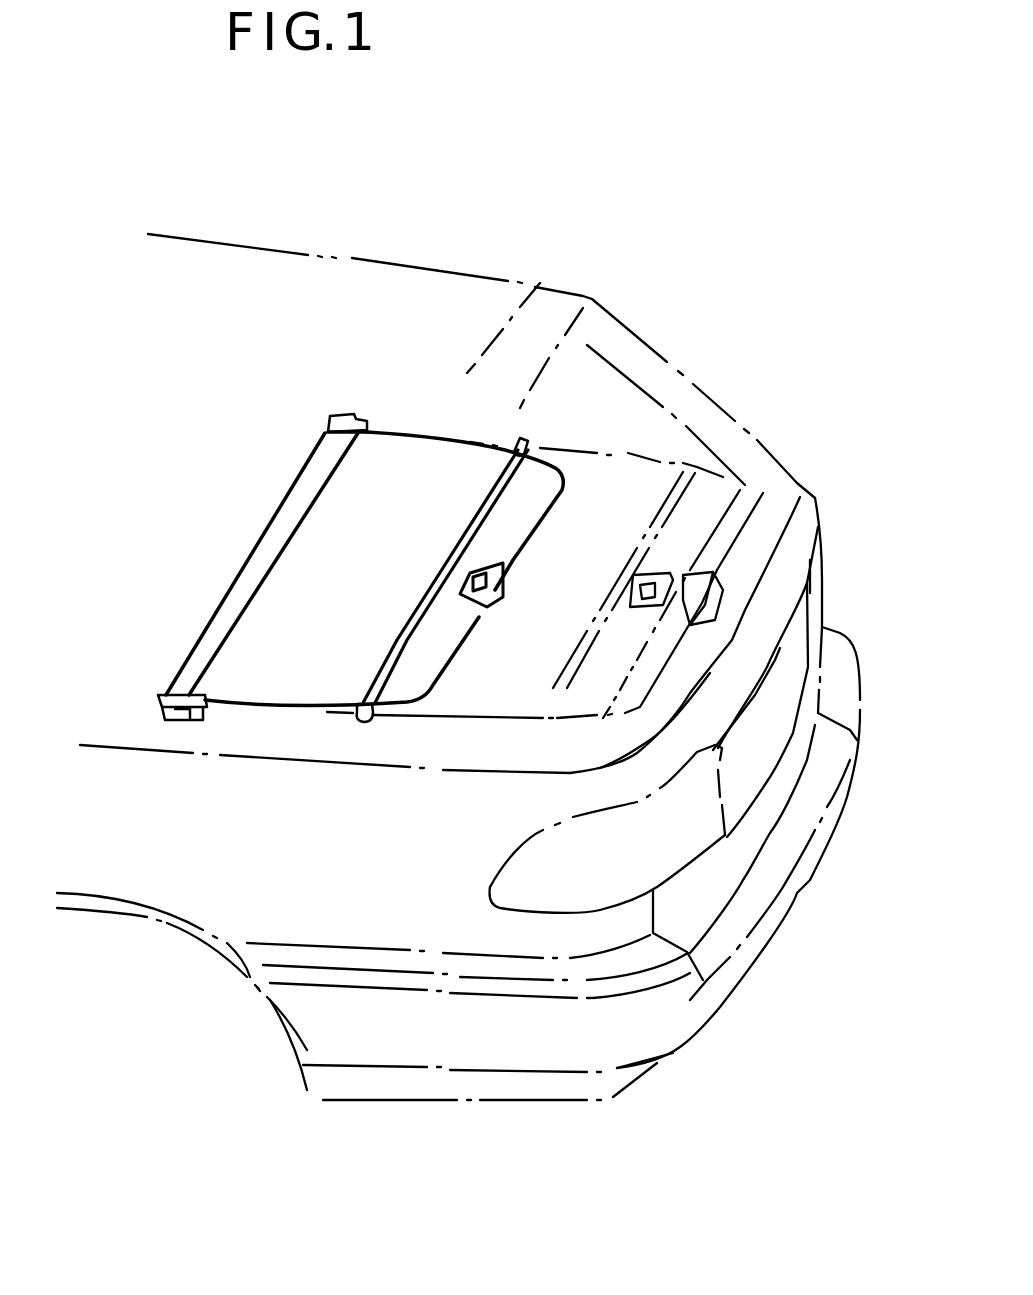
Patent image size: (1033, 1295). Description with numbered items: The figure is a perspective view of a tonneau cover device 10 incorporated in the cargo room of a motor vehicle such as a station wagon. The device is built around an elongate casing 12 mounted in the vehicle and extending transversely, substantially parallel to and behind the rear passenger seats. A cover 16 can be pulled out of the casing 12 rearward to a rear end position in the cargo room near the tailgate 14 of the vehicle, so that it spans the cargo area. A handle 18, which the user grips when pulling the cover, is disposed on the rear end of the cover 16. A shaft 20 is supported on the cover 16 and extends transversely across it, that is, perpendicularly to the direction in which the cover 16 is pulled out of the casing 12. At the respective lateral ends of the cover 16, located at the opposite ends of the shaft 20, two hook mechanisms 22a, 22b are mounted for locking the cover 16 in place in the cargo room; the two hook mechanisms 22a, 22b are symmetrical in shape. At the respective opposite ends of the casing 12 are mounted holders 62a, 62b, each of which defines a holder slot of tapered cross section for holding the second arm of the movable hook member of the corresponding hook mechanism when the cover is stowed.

The tonneau cover device 10 is at (665, 197).
The elongate casing 12 is at (248, 570).
The tailgate 14 is at (815, 498).
The cover 16 is at (407, 450).
The handle 18 is at (505, 588).
The shaft 20 is at (424, 597).
The hook mechanism 22a is at (527, 437).
The hook mechanism 22b is at (357, 725).
The holder 62a is at (340, 415).
The holder 62b is at (168, 690).